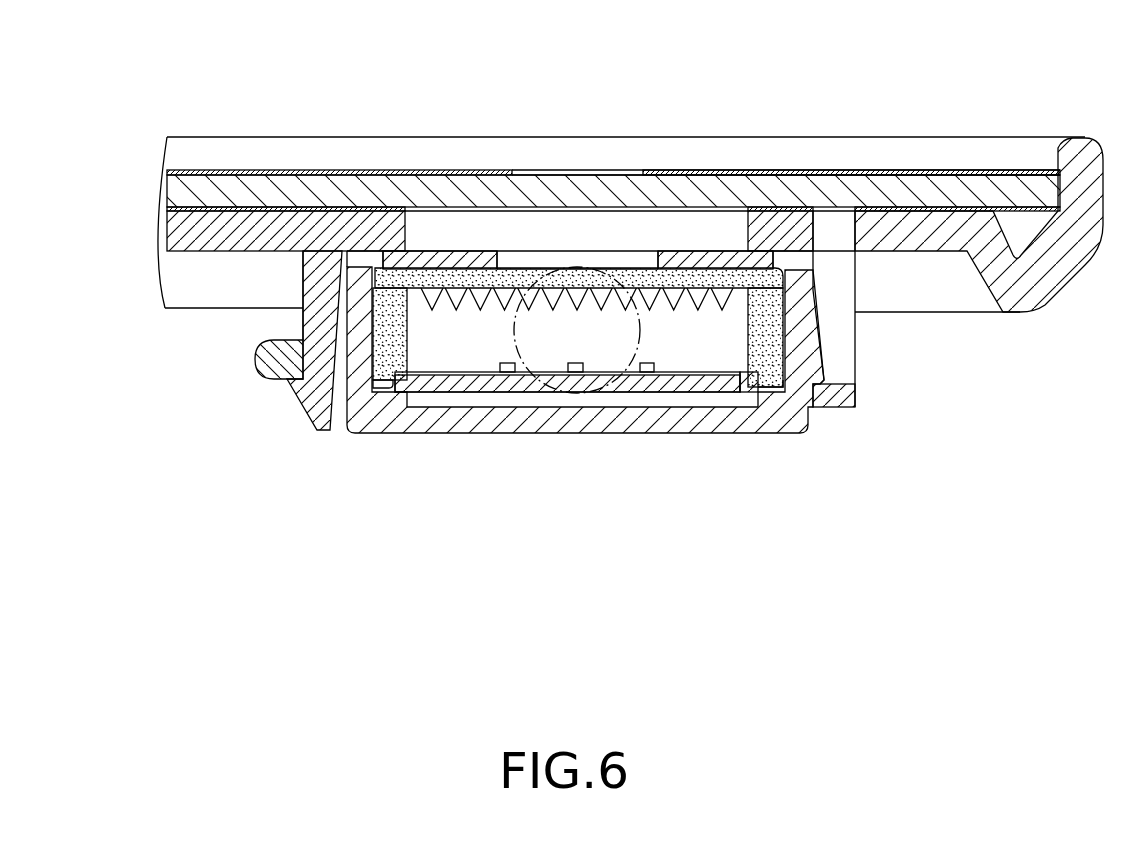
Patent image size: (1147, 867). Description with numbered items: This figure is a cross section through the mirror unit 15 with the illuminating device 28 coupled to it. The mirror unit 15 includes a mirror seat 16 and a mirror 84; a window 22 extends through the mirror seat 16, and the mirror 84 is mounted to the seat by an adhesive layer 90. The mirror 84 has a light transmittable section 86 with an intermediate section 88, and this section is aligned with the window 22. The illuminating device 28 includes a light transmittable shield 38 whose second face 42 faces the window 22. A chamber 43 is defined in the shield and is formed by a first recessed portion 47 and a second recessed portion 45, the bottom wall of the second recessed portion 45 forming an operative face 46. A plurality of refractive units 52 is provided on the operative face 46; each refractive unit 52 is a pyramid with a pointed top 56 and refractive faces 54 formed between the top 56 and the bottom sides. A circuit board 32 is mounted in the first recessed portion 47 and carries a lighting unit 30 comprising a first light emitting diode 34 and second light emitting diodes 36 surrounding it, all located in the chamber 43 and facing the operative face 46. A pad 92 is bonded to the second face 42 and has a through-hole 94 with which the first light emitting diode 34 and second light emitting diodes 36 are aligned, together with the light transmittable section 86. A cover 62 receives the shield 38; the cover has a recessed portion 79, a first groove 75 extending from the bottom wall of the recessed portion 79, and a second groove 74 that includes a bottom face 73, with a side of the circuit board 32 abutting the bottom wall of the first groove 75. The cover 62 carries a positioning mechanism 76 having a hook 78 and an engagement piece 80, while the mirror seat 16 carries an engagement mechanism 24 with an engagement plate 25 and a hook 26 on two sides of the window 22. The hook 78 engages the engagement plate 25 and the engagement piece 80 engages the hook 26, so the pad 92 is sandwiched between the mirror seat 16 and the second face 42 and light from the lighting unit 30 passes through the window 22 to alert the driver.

The mirror unit 15 is at (1070, 62).
The mirror seat 16 is at (1070, 157).
The window 22 is at (747, 233).
The engagement mechanism 24 is at (642, 581).
The engagement plate 25 is at (837, 408).
The hook 26 is at (327, 432).
The illuminating device 28 is at (499, 436).
The lighting unit 30 is at (533, 499).
The circuit board 32 is at (623, 383).
The first light emitting diode 34 is at (578, 373).
The second light emitting diodes 36 is at (510, 372).
The light transmittable shield 38 is at (753, 270).
The second face 42 is at (397, 270).
The chamber 43 is at (727, 476).
The second recessed portion 45 is at (740, 360).
The operative face 46 is at (724, 292).
The first recessed portion 47 is at (763, 382).
The refractive units 52 is at (580, 293).
The refractive faces 54 is at (479, 290).
The top 56 is at (478, 292).
The cover 62 is at (400, 433).
The bottom face 73 is at (464, 406).
The second groove 74 is at (418, 400).
The first groove 75 is at (383, 387).
The positioning mechanism 76 is at (533, 666).
The hook 78 is at (823, 360).
The recessed portion 79 is at (388, 328).
The engagement piece 80 is at (273, 385).
The mirror 84 is at (952, 188).
The light transmittable section 86 is at (532, 173).
The intermediate section 88 is at (620, 176).
The adhesive layer 90 is at (885, 210).
The pad 92 is at (433, 270).
The through-hole 94 is at (643, 262).